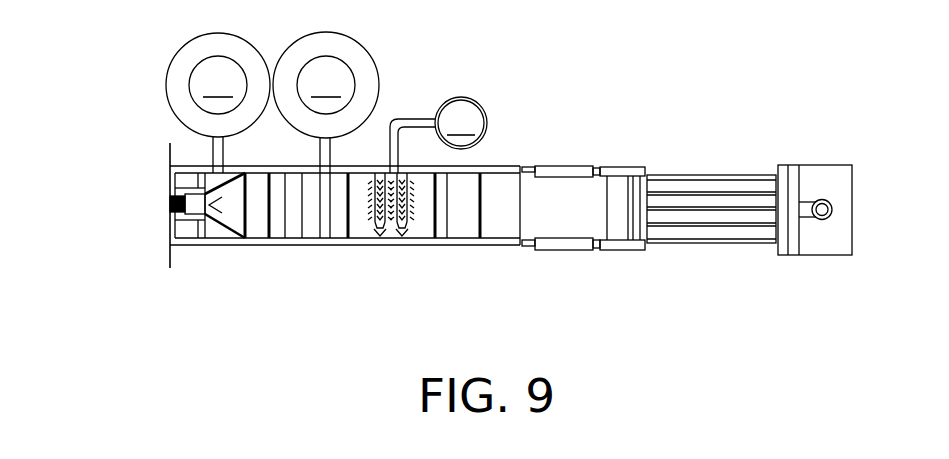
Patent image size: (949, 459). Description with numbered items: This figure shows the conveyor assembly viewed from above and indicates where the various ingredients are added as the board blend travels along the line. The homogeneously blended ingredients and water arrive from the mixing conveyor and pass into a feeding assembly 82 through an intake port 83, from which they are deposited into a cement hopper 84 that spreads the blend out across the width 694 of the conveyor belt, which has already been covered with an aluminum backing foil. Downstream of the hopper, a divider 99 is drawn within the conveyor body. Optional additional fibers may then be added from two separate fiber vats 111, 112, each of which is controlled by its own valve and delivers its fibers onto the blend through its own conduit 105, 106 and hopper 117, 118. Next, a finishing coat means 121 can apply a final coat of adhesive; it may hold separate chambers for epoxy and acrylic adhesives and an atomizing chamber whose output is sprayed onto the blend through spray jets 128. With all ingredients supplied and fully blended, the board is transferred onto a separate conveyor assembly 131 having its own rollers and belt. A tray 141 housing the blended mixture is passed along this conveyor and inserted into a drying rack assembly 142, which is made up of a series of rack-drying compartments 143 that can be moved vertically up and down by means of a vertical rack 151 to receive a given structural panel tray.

The feeding assembly 82 is at (242, 208).
The intake port 83 is at (186, 180).
The cement hopper 84 is at (280, 223).
The divider 99 is at (352, 231).
The conduit 105 is at (224, 149).
The conduit 106 is at (330, 152).
The fiber vat 111 is at (218, 85).
The fiber vat 112 is at (326, 85).
The hopper 117 is at (184, 245).
The hopper 118 is at (337, 188).
The finishing coat means 121 is at (438, 135).
The spray jets 128 is at (403, 232).
The separate conveyor assembly 131 is at (493, 190).
The tray 141 is at (622, 166).
The drying rack assembly 142 is at (798, 165).
The rack-drying compartments 143 is at (708, 175).
The vertical rack 151 is at (832, 212).
The width 694 is at (204, 193).